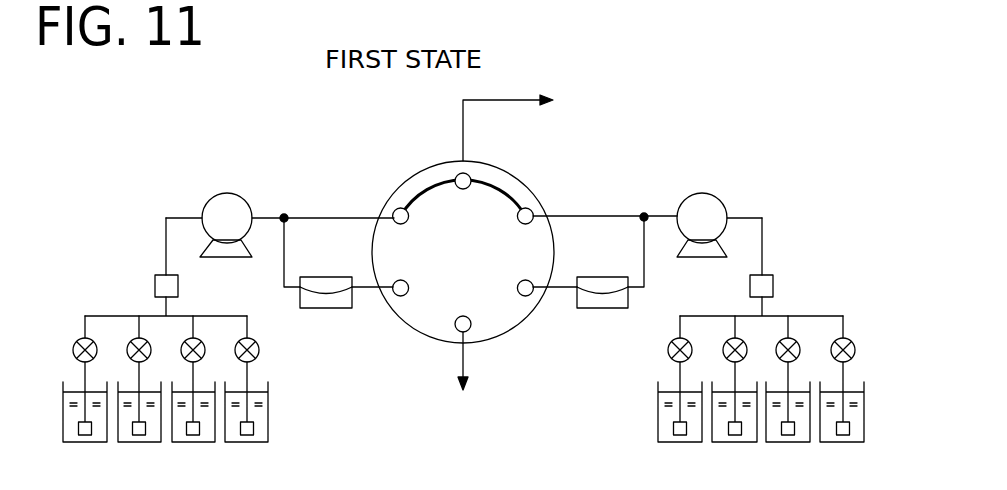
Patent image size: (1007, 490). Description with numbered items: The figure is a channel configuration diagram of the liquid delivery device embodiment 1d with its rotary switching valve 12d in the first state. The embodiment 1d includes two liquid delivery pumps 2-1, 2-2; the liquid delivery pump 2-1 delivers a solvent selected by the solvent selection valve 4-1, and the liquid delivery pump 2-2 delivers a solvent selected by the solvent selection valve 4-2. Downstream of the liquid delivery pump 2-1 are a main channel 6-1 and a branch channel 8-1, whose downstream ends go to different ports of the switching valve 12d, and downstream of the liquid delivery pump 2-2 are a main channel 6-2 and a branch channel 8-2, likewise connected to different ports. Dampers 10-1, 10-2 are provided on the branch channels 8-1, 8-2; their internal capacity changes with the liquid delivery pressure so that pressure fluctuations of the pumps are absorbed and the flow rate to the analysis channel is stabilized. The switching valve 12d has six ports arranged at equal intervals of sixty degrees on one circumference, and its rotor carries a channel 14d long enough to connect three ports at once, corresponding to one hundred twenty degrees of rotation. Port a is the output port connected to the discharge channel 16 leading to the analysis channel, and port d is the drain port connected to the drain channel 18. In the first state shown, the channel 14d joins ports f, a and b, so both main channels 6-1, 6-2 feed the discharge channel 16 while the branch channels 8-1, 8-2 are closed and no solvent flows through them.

The embodiment 1d is at (165, 110).
The liquid delivery pump 2-1 is at (236, 194).
The liquid delivery pump 2-2 is at (711, 194).
The solvent selection valve 4-1 is at (258, 355).
The solvent selection valve 4-2 is at (669, 352).
The main channel 6-1 is at (330, 215).
The main channel 6-2 is at (600, 215).
The branch channel 8-1 is at (282, 265).
The branch channel 8-2 is at (645, 263).
The damper 10-1 is at (330, 311).
The damper 10-2 is at (587, 310).
The rotary switching valve 12d is at (479, 161).
The channel 14d is at (504, 186).
The discharge channel 16 is at (462, 121).
The drain channel 18 is at (467, 353).